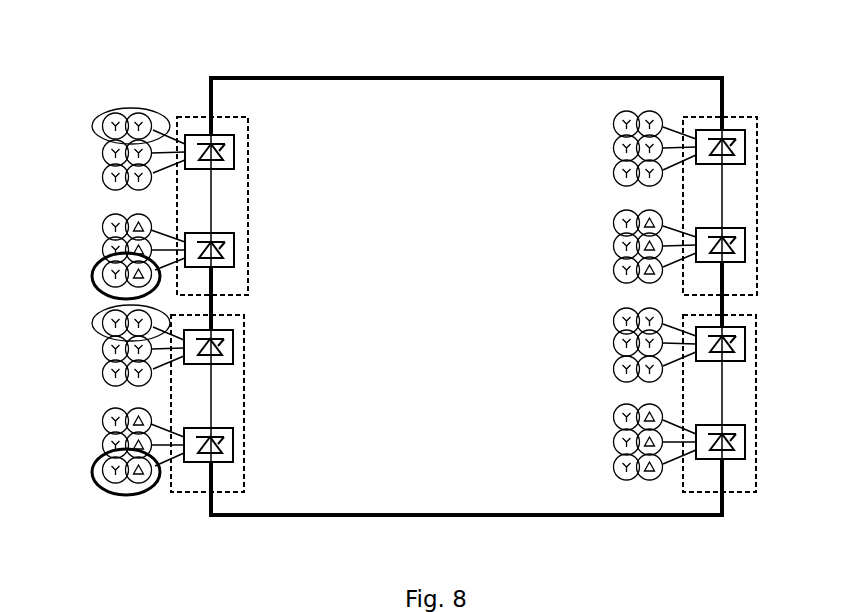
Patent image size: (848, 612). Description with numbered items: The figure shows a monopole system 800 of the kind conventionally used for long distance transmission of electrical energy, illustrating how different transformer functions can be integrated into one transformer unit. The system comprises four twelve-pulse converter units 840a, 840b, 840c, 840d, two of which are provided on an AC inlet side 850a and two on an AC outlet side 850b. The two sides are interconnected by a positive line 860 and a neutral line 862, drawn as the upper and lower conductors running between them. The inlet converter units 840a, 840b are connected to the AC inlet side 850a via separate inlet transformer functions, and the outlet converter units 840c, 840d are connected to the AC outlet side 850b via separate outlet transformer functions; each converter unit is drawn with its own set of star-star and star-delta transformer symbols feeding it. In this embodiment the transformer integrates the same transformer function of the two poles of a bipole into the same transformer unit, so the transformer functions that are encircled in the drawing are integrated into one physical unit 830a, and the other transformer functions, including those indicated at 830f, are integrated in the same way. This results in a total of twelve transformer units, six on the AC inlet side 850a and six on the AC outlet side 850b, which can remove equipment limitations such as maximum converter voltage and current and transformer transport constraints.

The monopole system 800 is at (195, 75).
The physical transformer unit 830a is at (93, 281).
The Y-Y transformer 830f is at (47, 472).
The inlet converter unit 840a is at (237, 112).
The inlet converter unit 840b is at (230, 312).
The outlet converter unit 840c is at (744, 112).
The outlet converter unit 840d is at (742, 313).
The AC inlet side 850a is at (239, 318).
The AC outlet side 850b is at (666, 318).
The positive line 860 is at (398, 518).
The neutral line 862 is at (455, 80).